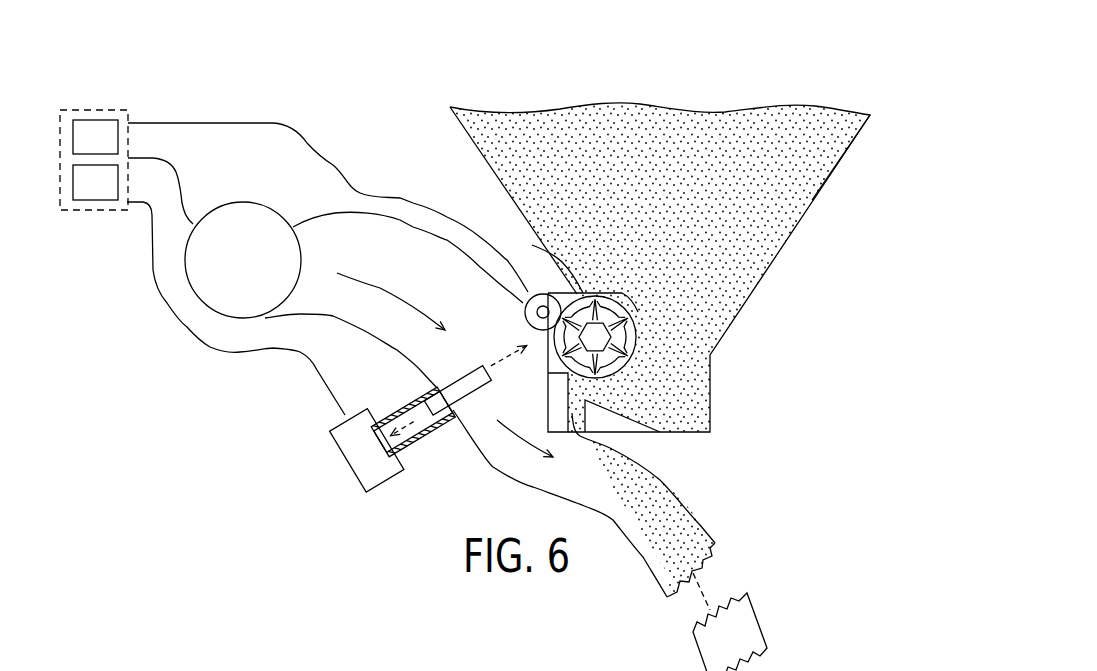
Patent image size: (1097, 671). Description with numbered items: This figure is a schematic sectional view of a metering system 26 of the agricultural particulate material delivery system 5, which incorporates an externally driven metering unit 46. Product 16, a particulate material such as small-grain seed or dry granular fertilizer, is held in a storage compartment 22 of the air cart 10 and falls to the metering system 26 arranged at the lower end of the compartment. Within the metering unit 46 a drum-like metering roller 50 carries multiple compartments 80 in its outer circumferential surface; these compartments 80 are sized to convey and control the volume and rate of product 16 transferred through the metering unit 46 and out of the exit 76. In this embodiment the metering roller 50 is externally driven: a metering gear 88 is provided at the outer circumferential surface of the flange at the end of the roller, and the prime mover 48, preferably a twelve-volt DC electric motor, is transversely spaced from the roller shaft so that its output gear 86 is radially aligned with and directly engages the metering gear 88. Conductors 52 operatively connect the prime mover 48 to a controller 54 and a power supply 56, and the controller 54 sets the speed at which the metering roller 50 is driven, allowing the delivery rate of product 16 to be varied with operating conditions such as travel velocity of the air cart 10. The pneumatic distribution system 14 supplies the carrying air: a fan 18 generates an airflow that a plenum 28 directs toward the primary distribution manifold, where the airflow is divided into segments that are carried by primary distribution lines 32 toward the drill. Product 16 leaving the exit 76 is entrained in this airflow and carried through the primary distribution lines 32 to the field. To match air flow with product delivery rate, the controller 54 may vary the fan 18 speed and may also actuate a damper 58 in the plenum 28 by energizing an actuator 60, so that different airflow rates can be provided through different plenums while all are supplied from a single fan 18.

The agricultural particulate material delivery system 5 is at (547, 79).
The air cart 10 is at (813, 97).
The pneumatic distribution system 14 is at (200, 316).
The product 16 is at (797, 230).
The fan 18 is at (243, 202).
The storage compartment 22 is at (813, 200).
The metering system 26 is at (728, 391).
The plenum 28 is at (392, 348).
The primary distribution line 32 is at (757, 618).
The metering unit 46 is at (318, 670).
The prime mover 48 is at (524, 325).
The metering roller 50 is at (557, 293).
The conductors 52 is at (230, 124).
The controller 54 is at (95, 137).
The power supply 56 is at (95, 182).
The damper 58 is at (468, 405).
The actuator 60 is at (350, 475).
The exit 76 is at (606, 442).
The compartments 80 is at (613, 298).
The output gear 86 is at (525, 312).
The metering gear 88 is at (541, 261).